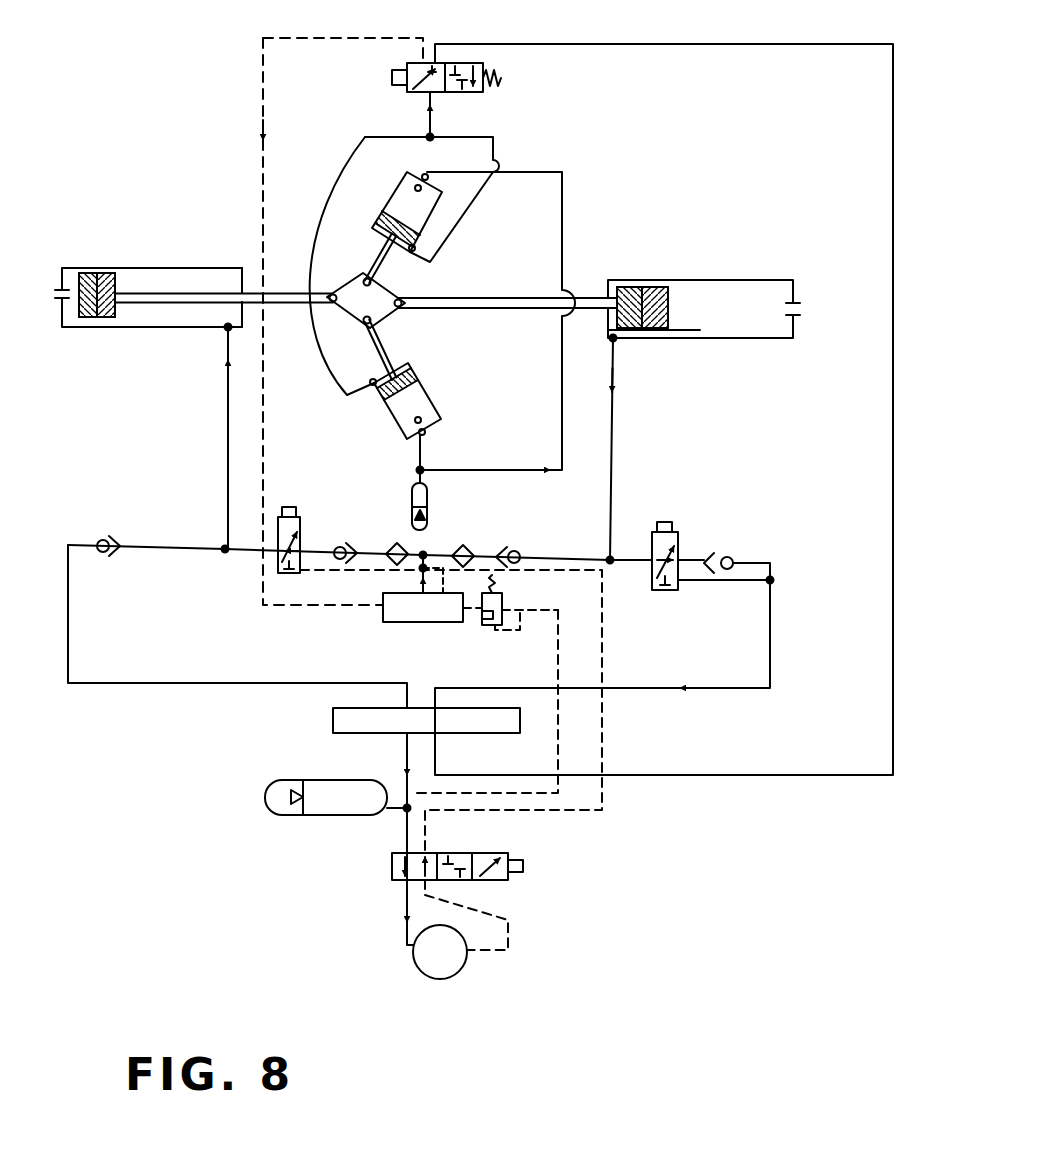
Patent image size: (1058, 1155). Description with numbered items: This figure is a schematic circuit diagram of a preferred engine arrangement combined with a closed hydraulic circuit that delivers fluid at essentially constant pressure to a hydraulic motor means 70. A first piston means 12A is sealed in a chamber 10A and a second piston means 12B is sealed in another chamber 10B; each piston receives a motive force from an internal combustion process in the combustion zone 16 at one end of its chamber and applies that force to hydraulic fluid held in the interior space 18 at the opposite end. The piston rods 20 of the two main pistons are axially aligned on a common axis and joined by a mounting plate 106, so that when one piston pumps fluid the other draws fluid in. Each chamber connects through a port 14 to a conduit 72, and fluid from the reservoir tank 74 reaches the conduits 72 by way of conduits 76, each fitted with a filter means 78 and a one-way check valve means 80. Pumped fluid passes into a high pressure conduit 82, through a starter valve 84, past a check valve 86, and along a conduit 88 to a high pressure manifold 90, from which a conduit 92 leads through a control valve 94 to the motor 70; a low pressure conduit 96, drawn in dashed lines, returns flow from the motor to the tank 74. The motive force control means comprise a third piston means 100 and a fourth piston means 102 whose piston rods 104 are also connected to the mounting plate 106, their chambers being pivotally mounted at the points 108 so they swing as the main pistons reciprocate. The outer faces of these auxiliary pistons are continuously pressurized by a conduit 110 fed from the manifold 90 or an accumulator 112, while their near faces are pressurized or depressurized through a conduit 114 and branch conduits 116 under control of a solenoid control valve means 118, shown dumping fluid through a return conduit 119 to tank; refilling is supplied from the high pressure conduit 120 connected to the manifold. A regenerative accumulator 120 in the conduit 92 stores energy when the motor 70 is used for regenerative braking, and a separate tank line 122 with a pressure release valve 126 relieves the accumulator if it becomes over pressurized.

The chamber 10A is at (178, 268).
The chamber 10B is at (702, 282).
The first piston means 12A is at (82, 328).
The second piston means 12B is at (632, 286).
The port 14 is at (226, 334).
The combustion zone 16 is at (63, 322).
The interior space 18 is at (205, 268).
The piston rod 20 is at (278, 290).
The hydraulic motor means 70 is at (462, 970).
The conduit 72 is at (227, 421).
The reservoir tank 74 is at (414, 623).
The conduit 76 is at (262, 545).
The filter means 78 is at (393, 542).
The one-way check valve means 80 is at (338, 548).
The high pressure conduit 82 is at (190, 549).
The starter valve 84 is at (304, 508).
The check valve 86 is at (102, 539).
The conduit 88 is at (70, 658).
The high pressure manifold 90 is at (332, 720).
The conduit 92 is at (404, 748).
The control valve 94 is at (505, 882).
The low pressure conduit 96 is at (608, 728).
The third piston means 100 is at (412, 373).
The fourth piston means 102 is at (390, 216).
The piston rod 104 is at (381, 254).
The mounting plate 106 is at (350, 327).
The pivot point 108 is at (415, 188).
The conduit 110 is at (532, 172).
The accumulator 112 is at (432, 511).
The conduit 114 is at (434, 126).
The branch conduit 116 is at (464, 212).
The solenoid control valve means 118 is at (402, 90).
The return conduit 119 is at (262, 66).
The high pressure conduit / regenerative accumulator 120 is at (710, 46).
The tank line 122 is at (556, 741).
The pressure release valve 126 is at (488, 627).